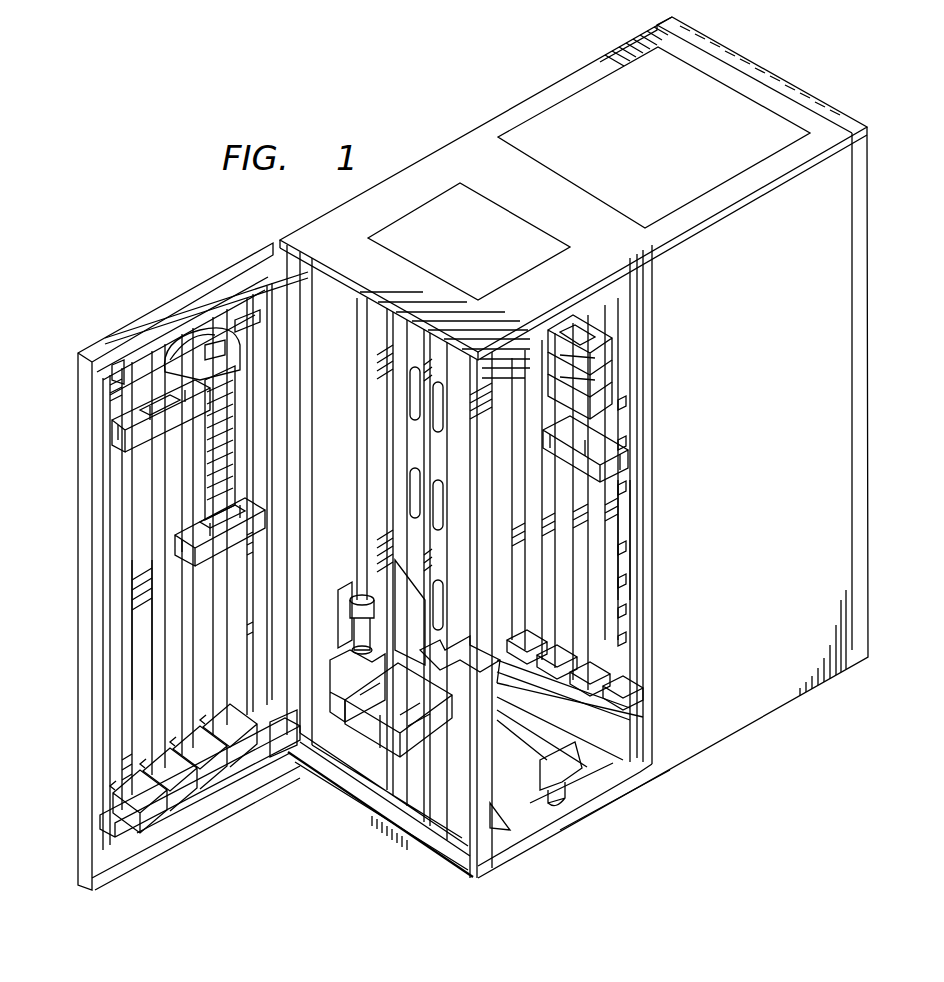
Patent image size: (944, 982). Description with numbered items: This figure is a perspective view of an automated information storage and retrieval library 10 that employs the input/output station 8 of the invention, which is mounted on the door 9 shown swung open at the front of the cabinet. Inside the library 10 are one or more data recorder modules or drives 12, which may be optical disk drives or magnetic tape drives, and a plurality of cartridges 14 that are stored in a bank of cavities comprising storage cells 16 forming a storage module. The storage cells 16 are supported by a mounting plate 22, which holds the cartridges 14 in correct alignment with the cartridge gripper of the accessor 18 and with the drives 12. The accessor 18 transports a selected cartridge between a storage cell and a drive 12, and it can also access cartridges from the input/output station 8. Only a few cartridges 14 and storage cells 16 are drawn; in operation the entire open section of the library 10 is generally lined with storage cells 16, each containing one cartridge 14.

The automated information storage and retrieval library 10 is at (468, 148).
The door 9 is at (165, 308).
The input/output station 8 is at (175, 468).
The storage cells 16 is at (255, 510).
The drives 12 is at (600, 328).
The cartridges 14 is at (595, 460).
The mounting plate 22 is at (625, 570).
The accessor 18 is at (358, 305).